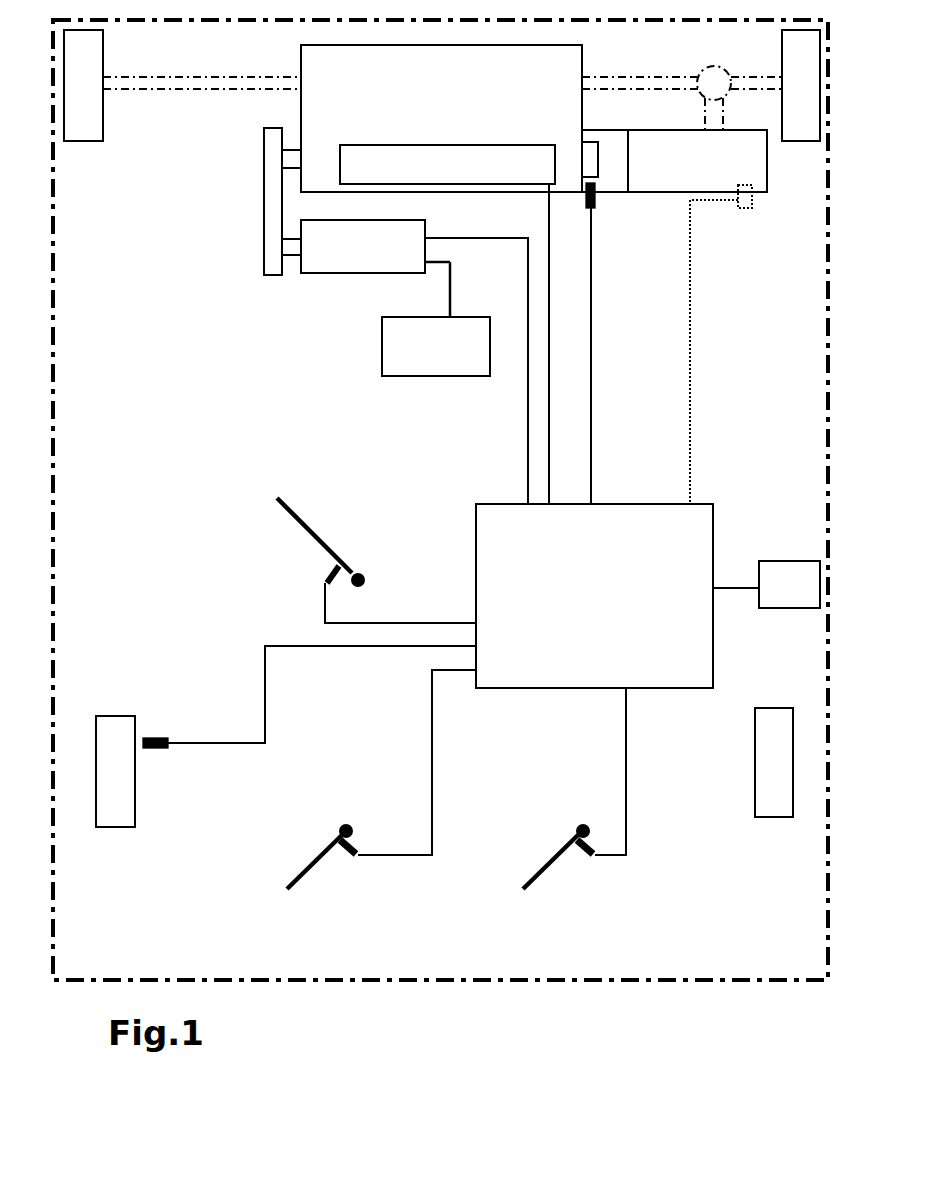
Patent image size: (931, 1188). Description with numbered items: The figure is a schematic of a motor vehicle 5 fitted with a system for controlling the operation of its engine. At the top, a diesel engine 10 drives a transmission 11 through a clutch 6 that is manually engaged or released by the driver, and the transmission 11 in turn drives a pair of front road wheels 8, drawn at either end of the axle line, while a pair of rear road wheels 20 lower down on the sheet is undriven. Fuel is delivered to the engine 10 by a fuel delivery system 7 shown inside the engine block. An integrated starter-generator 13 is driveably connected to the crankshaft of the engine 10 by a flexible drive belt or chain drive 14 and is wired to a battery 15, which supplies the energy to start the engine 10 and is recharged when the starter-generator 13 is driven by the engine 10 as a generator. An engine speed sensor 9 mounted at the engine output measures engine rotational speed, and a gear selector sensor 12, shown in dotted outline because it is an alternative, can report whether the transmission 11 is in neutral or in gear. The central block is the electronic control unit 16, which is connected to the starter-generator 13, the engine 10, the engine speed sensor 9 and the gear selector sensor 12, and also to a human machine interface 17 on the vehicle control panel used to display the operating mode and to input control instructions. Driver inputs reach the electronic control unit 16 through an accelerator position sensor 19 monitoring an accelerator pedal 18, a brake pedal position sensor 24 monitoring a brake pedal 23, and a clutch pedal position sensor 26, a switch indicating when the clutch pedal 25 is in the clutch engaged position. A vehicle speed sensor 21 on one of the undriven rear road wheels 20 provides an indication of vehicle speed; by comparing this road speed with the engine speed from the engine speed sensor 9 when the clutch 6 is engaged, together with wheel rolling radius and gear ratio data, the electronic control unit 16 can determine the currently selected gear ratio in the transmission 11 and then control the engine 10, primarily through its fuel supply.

The motor vehicle 5 is at (440, 535).
The clutch 6 is at (606, 123).
The fuel delivery system 7 is at (447, 164).
The front road wheels 8 is at (442, 85).
The engine speed sensor 9 is at (628, 343).
The engine 10 is at (441, 118).
The transmission 11 is at (697, 161).
The gear selector sensor 12 is at (724, 344).
The integrated starter-generator 13 is at (363, 246).
The drive belt or chain drive 14 is at (225, 208).
The battery 15 is at (436, 319).
The electronic control unit 16 is at (594, 596).
The human machine interface 17 is at (766, 584).
The accelerator pedal 18 is at (263, 542).
The accelerator position sensor 19 is at (319, 594).
The rear road wheels 20 is at (439, 786).
The vehicle speed sensor 21 is at (309, 692).
The brake pedal 23 is at (323, 879).
The brake pedal position sensor 24 is at (408, 802).
The clutch pedal 25 is at (556, 879).
The clutch pedal position sensor 26 is at (604, 811).